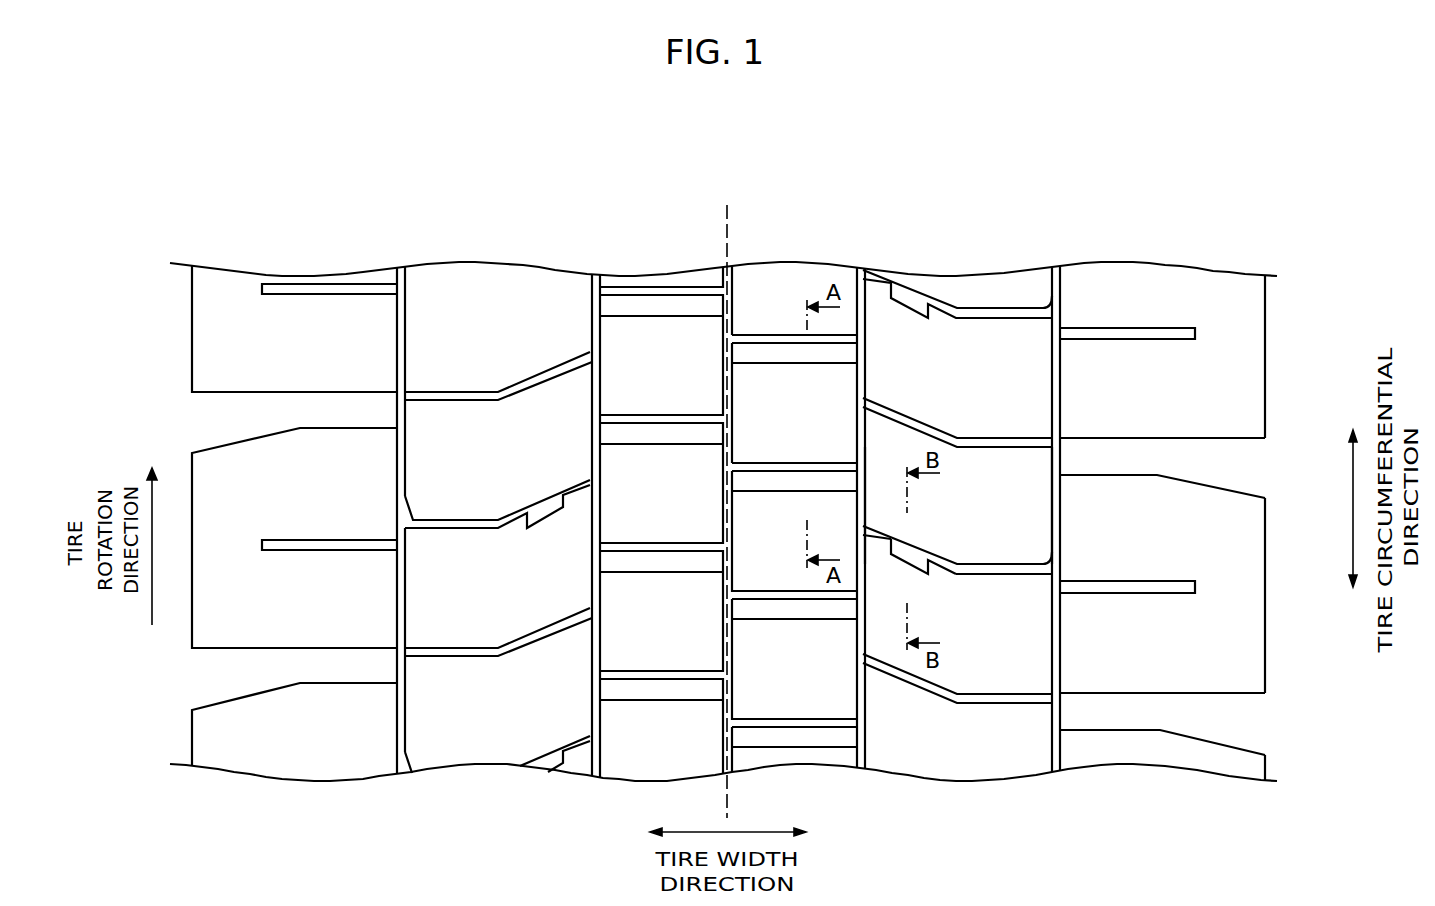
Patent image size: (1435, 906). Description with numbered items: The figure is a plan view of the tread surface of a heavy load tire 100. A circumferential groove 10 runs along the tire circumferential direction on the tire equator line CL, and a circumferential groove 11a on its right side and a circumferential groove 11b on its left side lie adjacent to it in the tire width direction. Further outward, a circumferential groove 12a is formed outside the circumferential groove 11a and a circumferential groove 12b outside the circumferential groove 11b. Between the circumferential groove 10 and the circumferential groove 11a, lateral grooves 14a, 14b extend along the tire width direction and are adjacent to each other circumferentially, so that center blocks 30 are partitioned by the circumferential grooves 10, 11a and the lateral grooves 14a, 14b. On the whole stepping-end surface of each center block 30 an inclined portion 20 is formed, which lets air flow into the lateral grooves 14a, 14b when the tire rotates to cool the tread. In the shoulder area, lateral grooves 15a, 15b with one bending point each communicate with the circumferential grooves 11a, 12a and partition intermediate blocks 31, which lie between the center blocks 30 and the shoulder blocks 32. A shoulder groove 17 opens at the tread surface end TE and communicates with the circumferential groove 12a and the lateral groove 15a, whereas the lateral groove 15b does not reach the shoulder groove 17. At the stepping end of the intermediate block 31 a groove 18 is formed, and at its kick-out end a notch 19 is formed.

The heavy load tire 100 is at (1112, 156).
The circumferential groove 10 is at (759, 493).
The tire equator line CL is at (733, 221).
The circumferential groove 11a is at (862, 265).
The circumferential groove 11b is at (596, 265).
The circumferential groove 12a is at (1056, 265).
The circumferential groove 12b is at (400, 265).
The lateral groove 14a is at (768, 335).
The lateral groove 14b is at (768, 463).
The lateral groove 15a is at (938, 432).
The lateral groove 15b is at (957, 453).
The shoulder groove 17 is at (1246, 468).
The groove 18 is at (918, 566).
The notch 19 is at (1047, 556).
The inclined portion 20 is at (846, 353).
The center block 30 is at (825, 401).
The intermediate block 31 is at (980, 505).
The shoulder block 32 is at (1246, 636).
The tread surface end TE is at (1266, 326).